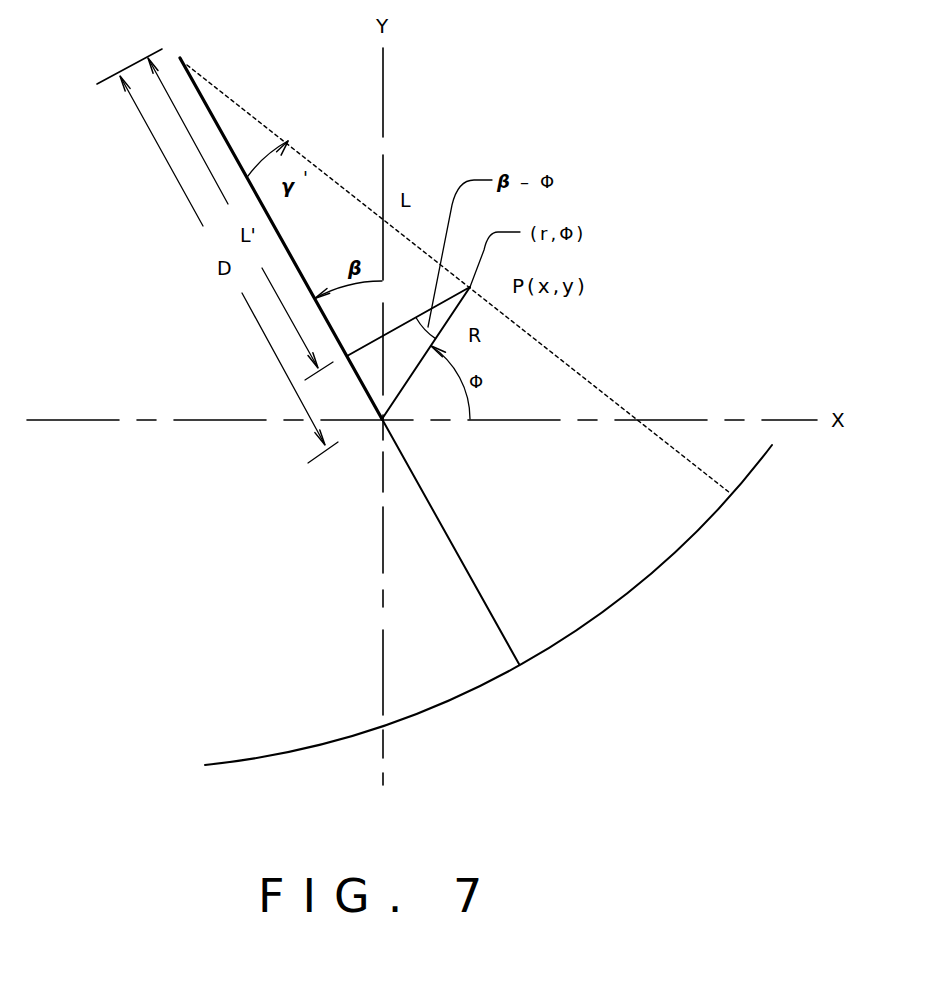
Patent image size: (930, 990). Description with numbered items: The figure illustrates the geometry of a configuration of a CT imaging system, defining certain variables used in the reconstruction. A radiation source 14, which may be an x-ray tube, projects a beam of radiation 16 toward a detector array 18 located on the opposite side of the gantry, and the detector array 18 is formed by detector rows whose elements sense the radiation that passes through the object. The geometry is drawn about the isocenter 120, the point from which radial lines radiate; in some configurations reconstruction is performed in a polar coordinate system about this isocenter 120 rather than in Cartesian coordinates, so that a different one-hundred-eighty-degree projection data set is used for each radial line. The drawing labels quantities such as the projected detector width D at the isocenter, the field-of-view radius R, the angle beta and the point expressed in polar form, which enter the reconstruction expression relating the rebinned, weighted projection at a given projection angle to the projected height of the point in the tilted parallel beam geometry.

The radiation source 14 is at (180, 58).
The beam of radiation 16 is at (333, 213).
The detector array 18 is at (673, 555).
The isocenter 120 is at (382, 420).